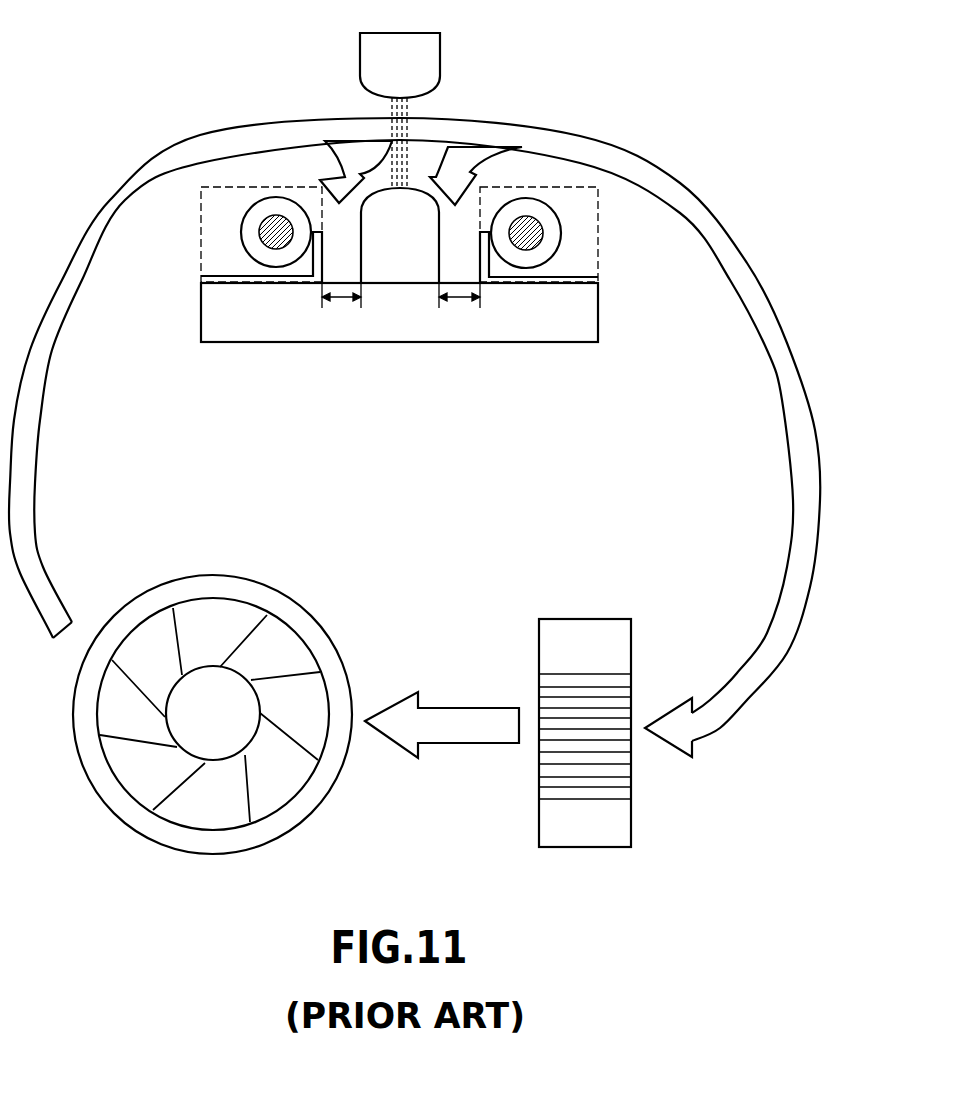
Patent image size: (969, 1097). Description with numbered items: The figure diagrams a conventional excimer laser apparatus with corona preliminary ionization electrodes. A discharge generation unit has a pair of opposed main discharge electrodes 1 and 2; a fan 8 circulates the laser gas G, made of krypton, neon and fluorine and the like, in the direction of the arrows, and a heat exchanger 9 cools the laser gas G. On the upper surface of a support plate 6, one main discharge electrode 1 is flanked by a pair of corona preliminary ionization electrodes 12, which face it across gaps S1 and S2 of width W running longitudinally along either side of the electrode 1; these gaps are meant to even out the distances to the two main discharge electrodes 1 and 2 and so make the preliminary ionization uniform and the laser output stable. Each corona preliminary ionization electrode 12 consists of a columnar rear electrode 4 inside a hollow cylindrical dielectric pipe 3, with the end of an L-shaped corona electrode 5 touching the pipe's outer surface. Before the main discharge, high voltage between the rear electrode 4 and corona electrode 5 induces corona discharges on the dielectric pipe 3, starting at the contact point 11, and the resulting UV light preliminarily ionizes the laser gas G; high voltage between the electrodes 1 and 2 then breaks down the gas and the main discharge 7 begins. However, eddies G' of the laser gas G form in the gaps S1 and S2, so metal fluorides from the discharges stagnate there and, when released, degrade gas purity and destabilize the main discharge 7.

The main discharge electrode 1 is at (387, 202).
The main discharge electrode 2 is at (428, 58).
The dielectric pipe 3 is at (257, 212).
The rear electrode 4 is at (256, 232).
The corona electrode 5 is at (228, 280).
The support plate 6 is at (590, 318).
The main discharge 7 is at (390, 106).
The fan 8 is at (253, 597).
The heat exchanger 9 is at (582, 635).
The starting point 11 is at (322, 232).
The corona preliminary ionization electrode 12 is at (201, 238).
The laser gas G is at (415, 414).
The eddy G' is at (390, 173).
The gap S1 is at (338, 267).
The gap S2 is at (466, 267).
The width W is at (401, 312).